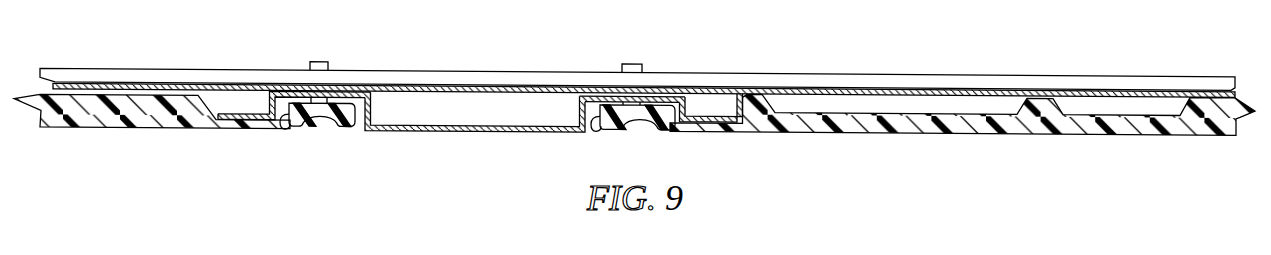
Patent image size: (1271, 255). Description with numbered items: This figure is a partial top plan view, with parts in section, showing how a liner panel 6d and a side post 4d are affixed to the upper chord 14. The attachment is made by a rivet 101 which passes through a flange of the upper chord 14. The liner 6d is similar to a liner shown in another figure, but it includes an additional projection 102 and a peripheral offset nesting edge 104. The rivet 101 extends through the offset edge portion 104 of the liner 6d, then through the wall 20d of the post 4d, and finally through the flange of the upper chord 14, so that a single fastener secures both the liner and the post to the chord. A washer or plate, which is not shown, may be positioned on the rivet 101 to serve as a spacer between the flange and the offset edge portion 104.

The upper chord 14 is at (850, 75).
The rivet 101 is at (317, 62).
The wall 20d is at (293, 93).
The projection 102 is at (739, 93).
The peripheral offset nesting edge 104 is at (634, 115).
The side post 4d is at (430, 131).
The liner panel 6d is at (157, 118).